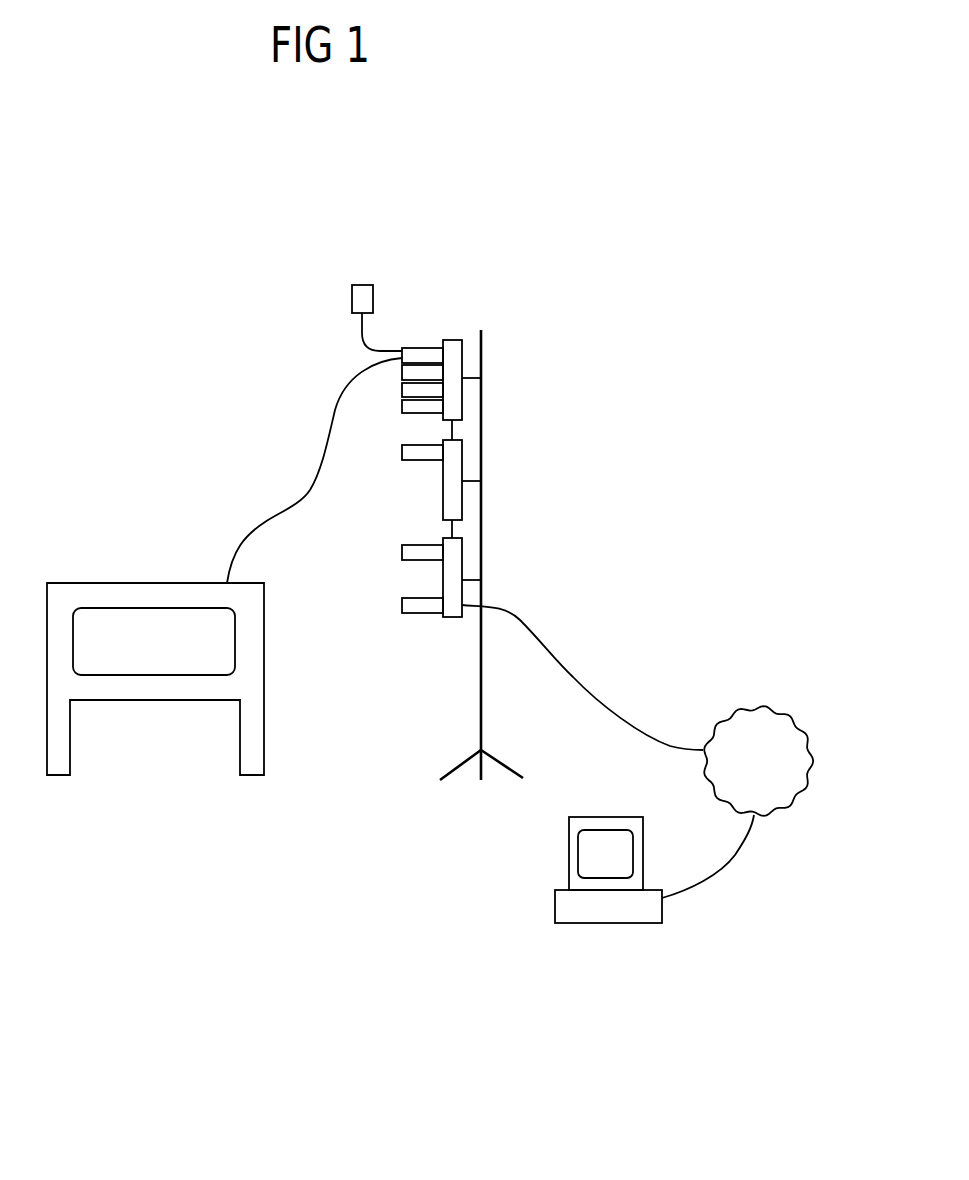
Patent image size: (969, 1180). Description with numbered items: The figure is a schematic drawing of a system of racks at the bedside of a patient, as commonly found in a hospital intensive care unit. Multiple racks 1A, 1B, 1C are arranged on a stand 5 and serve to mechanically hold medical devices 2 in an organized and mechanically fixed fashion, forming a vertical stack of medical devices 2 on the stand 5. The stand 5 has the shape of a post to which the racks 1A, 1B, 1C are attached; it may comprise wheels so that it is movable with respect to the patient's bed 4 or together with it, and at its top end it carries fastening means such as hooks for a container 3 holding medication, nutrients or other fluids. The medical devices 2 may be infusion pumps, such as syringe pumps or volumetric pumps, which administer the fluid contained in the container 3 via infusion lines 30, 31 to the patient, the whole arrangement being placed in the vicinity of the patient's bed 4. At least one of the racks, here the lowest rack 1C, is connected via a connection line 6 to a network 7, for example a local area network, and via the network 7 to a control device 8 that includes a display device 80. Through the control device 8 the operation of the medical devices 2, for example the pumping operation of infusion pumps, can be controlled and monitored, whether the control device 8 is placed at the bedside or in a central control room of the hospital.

The rack 1A is at (453, 352).
The rack 1B is at (455, 500).
The rack 1C is at (457, 565).
The medical device 2 is at (412, 372).
The container 3 is at (352, 297).
The infusion line 30 is at (361, 337).
The infusion line 31 is at (282, 508).
The patient's bed 4 is at (162, 582).
The stand 5 is at (484, 413).
The connection line 6 is at (574, 676).
The network 7 is at (803, 732).
The control device 8 is at (620, 925).
The display device 80 is at (586, 855).